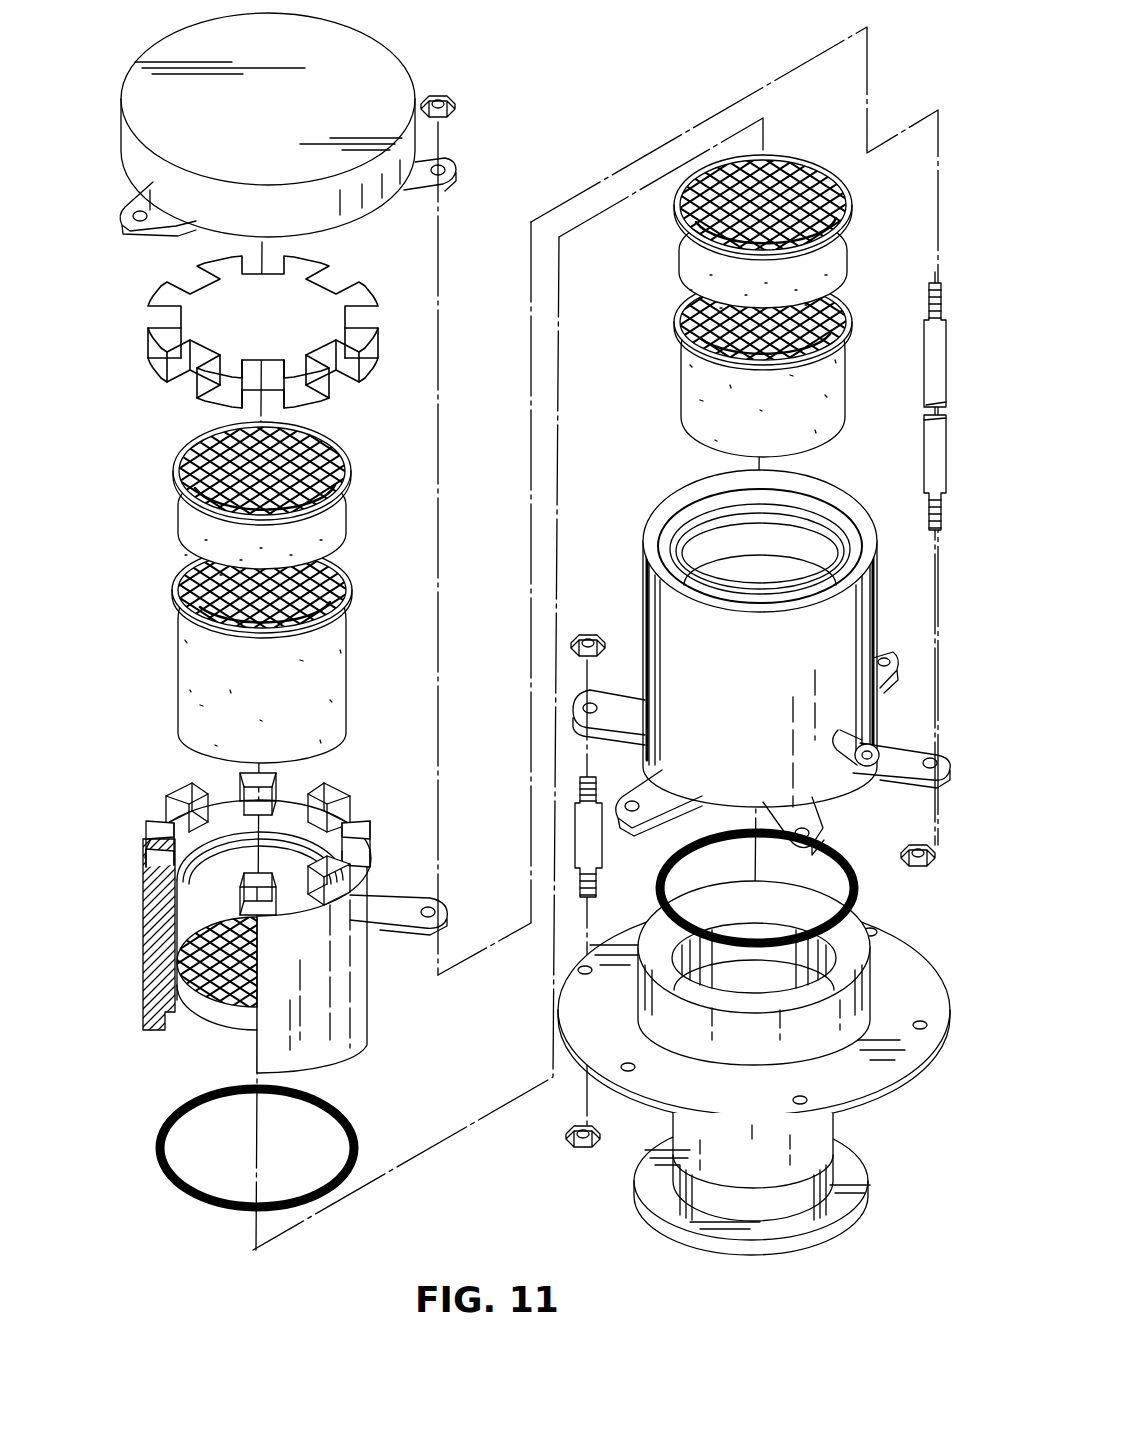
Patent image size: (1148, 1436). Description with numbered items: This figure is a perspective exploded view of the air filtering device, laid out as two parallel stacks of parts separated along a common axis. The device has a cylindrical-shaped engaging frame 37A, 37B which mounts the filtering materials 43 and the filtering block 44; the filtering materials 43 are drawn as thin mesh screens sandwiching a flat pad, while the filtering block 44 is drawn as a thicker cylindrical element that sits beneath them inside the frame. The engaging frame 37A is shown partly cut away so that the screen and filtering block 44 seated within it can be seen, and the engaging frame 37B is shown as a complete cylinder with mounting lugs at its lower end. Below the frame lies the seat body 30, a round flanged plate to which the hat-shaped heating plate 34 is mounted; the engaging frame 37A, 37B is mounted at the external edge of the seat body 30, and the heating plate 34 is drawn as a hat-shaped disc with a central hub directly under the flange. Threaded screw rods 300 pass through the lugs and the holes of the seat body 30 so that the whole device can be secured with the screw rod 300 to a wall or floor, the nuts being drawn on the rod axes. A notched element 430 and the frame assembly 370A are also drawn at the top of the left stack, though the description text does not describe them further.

The castellated lock nut 430 is at (154, 358).
The filtering materials 43 is at (178, 527).
The filtering block 44 is at (178, 665).
The filter housing assembly 370A is at (257, 910).
The engaging frame 37A is at (150, 915).
The engaging frame 37B is at (655, 588).
The screw rod 300 is at (934, 358).
The seat body 30 is at (862, 963).
The heating plate 34 is at (703, 1190).